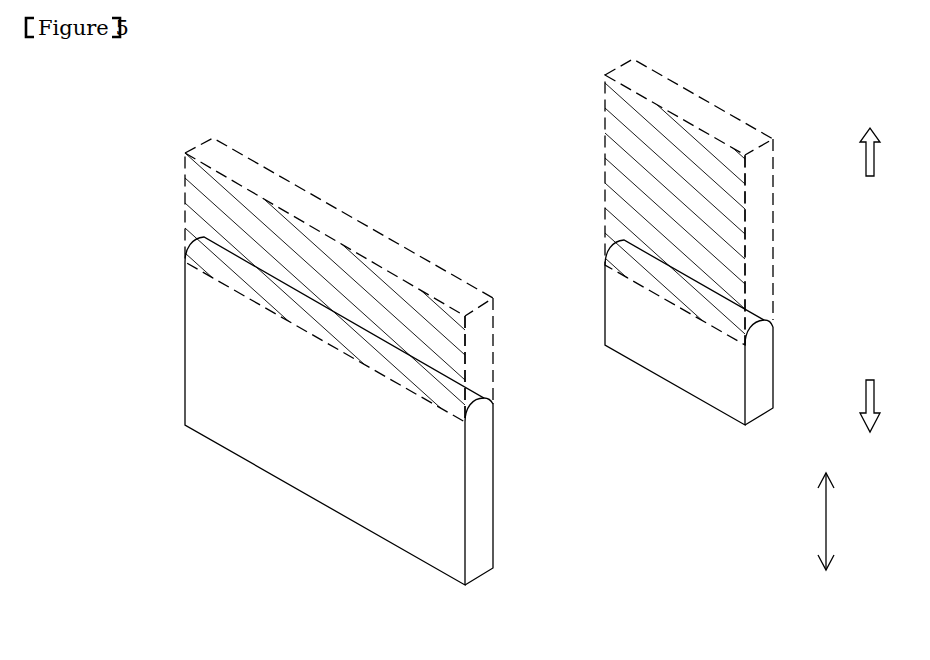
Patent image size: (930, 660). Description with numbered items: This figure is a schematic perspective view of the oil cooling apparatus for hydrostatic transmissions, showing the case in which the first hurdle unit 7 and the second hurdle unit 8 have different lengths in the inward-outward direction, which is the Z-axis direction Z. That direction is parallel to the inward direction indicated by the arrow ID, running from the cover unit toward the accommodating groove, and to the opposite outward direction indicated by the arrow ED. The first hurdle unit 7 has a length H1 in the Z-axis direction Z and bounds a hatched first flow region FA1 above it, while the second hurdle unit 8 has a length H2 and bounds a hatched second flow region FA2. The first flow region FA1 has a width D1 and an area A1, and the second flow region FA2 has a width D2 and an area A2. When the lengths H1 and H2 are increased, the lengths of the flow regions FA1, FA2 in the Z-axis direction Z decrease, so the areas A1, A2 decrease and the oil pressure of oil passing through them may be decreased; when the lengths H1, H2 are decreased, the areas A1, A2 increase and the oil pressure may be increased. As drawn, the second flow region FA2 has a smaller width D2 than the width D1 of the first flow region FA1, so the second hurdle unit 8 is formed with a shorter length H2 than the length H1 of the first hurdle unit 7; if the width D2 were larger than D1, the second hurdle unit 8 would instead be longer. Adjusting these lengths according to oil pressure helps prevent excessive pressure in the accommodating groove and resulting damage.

The first hurdle unit 7 is at (481, 510).
The second hurdle unit 8 is at (762, 357).
The area of the first flow region A1 is at (207, 202).
The area of the second flow region A2 is at (630, 166).
The first flow region FA1 is at (487, 353).
The second flow region FA2 is at (768, 192).
The length of the first hurdle unit H1 is at (177, 420).
The length of the second hurdle unit H2 is at (594, 338).
The width of the first flow region D1 is at (185, 425).
The width of the second flow region D2 is at (605, 345).
The outward direction ED is at (869, 138).
The inward direction ID is at (869, 417).
The Z-axis direction Z is at (826, 510).